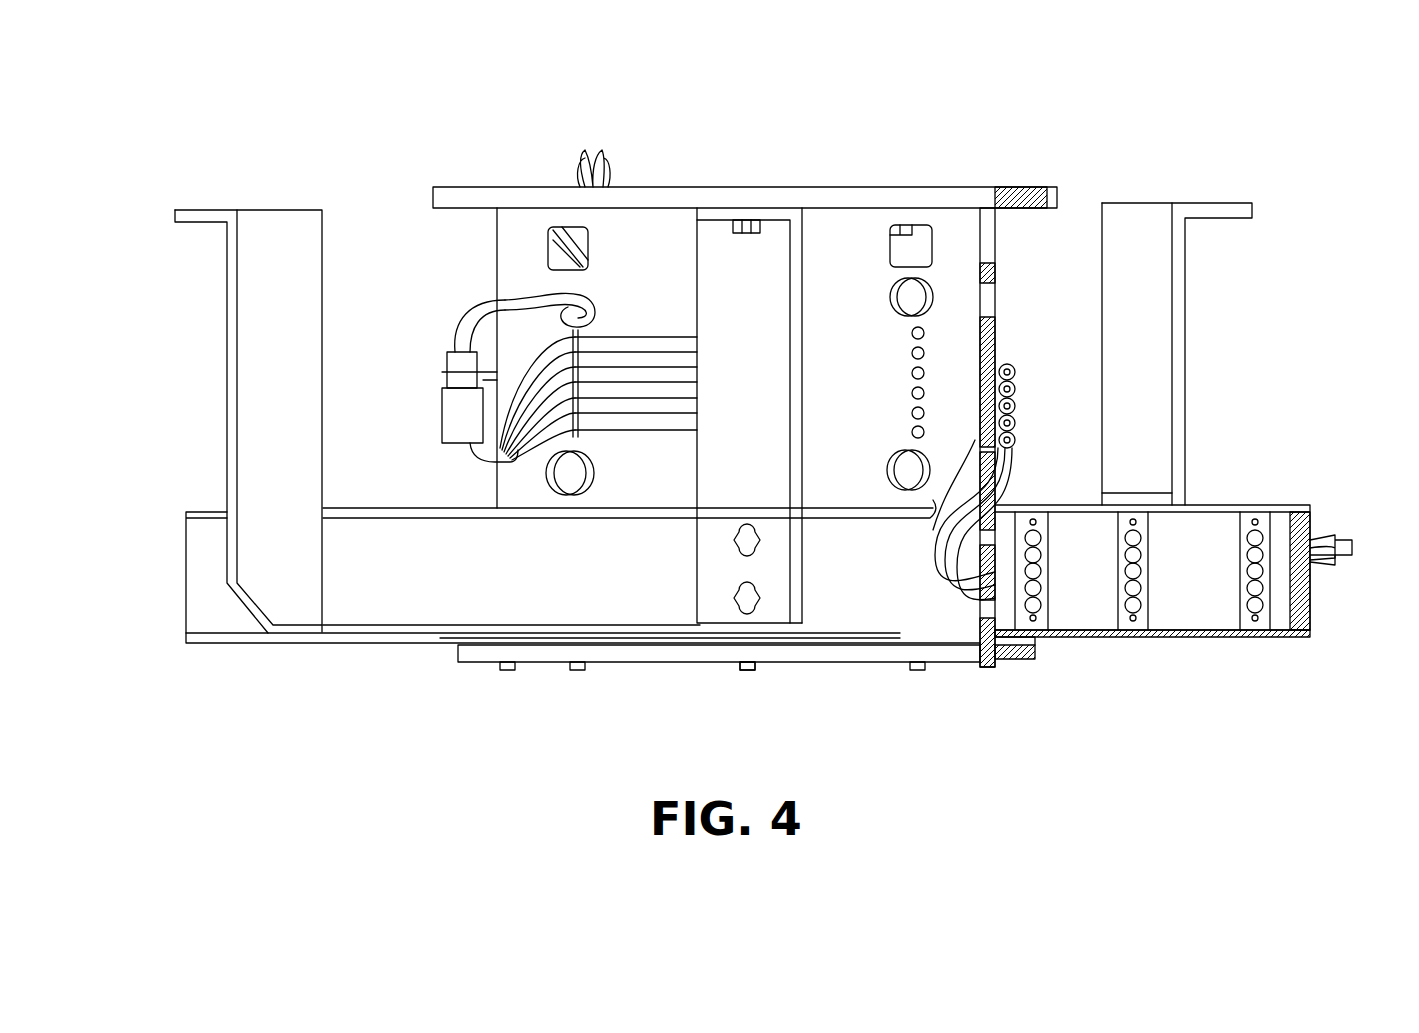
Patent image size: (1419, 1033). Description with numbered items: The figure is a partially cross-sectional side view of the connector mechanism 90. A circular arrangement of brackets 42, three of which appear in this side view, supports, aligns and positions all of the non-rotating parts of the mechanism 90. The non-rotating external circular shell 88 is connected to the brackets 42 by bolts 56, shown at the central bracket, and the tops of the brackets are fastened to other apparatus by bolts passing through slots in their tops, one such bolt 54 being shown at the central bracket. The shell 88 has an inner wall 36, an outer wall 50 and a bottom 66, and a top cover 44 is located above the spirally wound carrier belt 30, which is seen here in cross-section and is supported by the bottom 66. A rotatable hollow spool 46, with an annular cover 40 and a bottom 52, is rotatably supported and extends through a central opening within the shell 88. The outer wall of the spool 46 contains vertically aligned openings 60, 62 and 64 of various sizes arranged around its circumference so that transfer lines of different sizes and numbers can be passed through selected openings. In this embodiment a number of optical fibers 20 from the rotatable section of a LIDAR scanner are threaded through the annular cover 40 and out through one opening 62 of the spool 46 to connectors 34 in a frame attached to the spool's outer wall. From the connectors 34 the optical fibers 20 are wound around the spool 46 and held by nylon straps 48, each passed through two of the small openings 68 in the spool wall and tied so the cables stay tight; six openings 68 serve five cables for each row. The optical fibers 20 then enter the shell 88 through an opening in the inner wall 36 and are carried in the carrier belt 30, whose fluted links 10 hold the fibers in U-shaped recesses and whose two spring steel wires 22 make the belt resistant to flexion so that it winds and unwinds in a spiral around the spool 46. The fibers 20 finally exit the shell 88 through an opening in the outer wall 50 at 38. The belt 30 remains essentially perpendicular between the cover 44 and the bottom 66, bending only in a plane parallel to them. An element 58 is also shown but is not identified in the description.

The fluted links 10 is at (1128, 618).
The optical fibers 20 is at (595, 150).
The steel wires 22 is at (1250, 522).
The carrier belt 30 is at (1125, 548).
The connectors 34 is at (448, 418).
The inner wall 36 is at (983, 600).
The exit location in outer wall 38 is at (1310, 540).
The annular cover 40 is at (822, 187).
The brackets 42 is at (228, 415).
The top cover 44 is at (383, 508).
The rotatable spool 46 is at (500, 345).
The nylon straps 48 is at (575, 332).
The outer wall 50 is at (1312, 597).
The bottom 52 is at (540, 665).
The bolt 54 is at (740, 228).
The bolts 56 is at (752, 542).
The foot 58 is at (745, 668).
The opening 60 is at (597, 470).
The opening 62 is at (588, 300).
The opening 64 is at (550, 248).
The bottom 66 is at (248, 640).
The small openings 68 is at (912, 373).
The external circular shell 88 is at (186, 580).
The connector mechanism 90 is at (203, 185).